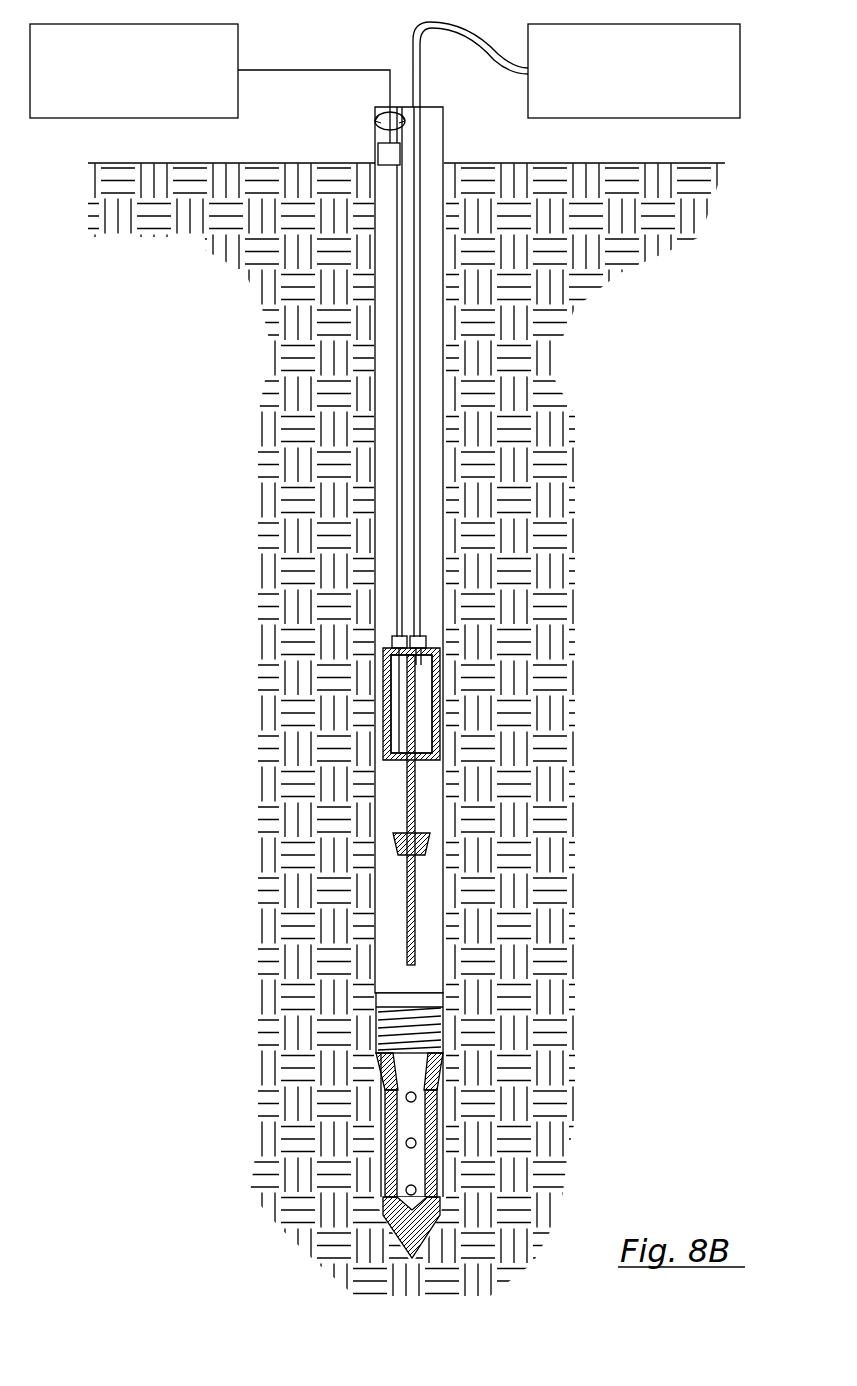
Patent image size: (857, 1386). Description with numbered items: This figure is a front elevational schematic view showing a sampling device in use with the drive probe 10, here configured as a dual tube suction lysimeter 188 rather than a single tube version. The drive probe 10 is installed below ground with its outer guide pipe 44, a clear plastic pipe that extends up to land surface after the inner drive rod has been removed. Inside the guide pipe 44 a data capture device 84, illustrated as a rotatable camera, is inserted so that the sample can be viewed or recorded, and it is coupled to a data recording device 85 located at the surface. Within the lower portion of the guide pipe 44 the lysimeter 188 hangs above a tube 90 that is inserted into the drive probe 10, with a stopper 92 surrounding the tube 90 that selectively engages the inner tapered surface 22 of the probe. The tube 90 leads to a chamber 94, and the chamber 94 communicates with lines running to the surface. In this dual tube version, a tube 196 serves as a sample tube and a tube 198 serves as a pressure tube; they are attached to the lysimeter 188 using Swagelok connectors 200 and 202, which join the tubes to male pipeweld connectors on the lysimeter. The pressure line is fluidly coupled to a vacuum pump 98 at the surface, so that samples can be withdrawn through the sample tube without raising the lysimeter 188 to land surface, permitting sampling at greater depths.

The data recording device 85 is at (238, 60).
The vacuum pump 98 is at (742, 58).
The data capture device 84 is at (385, 152).
The guide pipe 44 is at (443, 358).
The tube 196 is at (400, 497).
The tube 198 is at (420, 545).
The Swagelok connector 200 is at (395, 640).
The Swagelok connector 202 is at (428, 640).
The dual tube suction lysimeter 188 is at (386, 712).
The chamber 94 is at (425, 700).
The tube 90 is at (415, 812).
The stopper 92 is at (400, 847).
The inner tapered surface 22 is at (380, 1040).
The drive probe 10 is at (448, 1120).